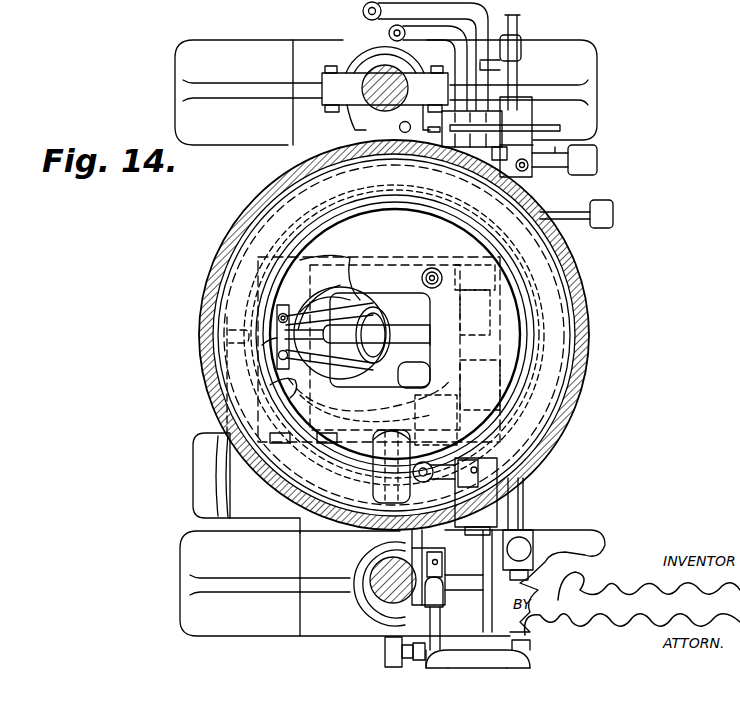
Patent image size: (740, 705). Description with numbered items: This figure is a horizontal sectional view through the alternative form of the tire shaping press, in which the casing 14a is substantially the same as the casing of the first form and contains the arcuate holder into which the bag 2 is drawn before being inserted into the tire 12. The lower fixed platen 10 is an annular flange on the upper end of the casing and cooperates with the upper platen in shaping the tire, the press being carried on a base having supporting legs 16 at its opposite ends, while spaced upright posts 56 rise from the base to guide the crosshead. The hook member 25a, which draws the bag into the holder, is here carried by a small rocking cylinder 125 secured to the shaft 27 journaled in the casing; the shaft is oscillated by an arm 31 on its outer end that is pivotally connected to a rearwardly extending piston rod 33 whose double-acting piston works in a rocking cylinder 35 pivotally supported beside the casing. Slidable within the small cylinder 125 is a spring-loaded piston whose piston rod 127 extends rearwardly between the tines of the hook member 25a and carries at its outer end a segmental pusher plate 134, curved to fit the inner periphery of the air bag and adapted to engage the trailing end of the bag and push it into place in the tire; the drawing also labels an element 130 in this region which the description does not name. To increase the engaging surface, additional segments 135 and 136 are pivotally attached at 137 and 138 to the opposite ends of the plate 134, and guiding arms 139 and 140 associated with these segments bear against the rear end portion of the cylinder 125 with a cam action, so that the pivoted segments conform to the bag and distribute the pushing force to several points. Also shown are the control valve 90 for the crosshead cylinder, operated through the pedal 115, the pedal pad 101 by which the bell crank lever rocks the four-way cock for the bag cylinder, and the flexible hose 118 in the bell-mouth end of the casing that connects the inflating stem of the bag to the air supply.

The bag 2 is at (394, 335).
The lower fixed platen 10 is at (225, 321).
The tire 12 is at (560, 272).
The casing 14a is at (227, 372).
The supporting legs 16 is at (268, 143).
The hook member 25a is at (407, 325).
The shaft 27 is at (541, 458).
The arm 31 is at (530, 473).
The piston rod 33 is at (448, 458).
The rocking cylinder 35 is at (246, 483).
The upright posts 56 is at (366, 108).
The control valve 90 is at (498, 118).
The pedal pad 101 is at (606, 216).
The pedal 115 is at (592, 158).
The flexible hose 118 is at (433, 267).
The small rocking cylinder 125 is at (422, 347).
The piston rod 127 is at (325, 331).
The bearing 130 is at (398, 381).
The segmental pusher plate 134 is at (275, 345).
The additional segment 135 is at (279, 318).
The additional segment 136 is at (283, 362).
The pivot 137 is at (324, 301).
The pivot 138 is at (340, 348).
The guiding arm 139 is at (360, 282).
The guiding arm 140 is at (362, 376).